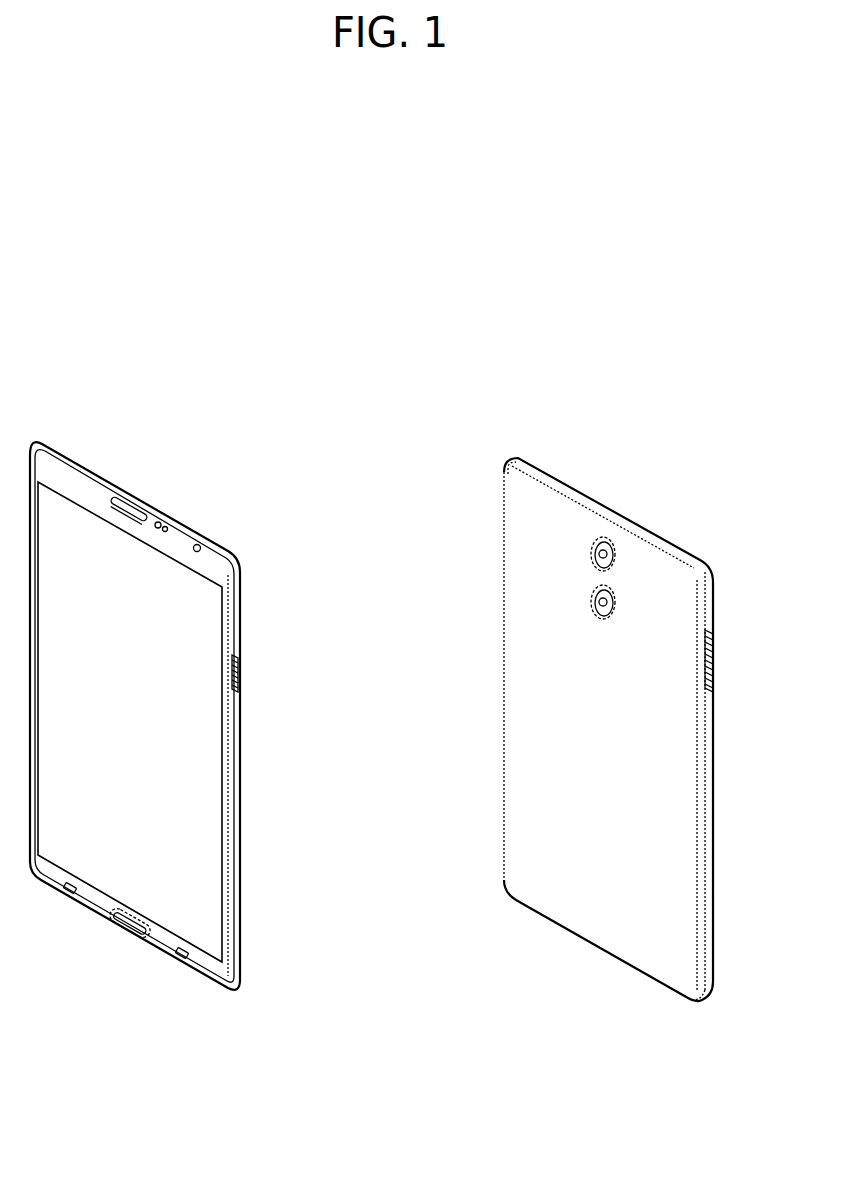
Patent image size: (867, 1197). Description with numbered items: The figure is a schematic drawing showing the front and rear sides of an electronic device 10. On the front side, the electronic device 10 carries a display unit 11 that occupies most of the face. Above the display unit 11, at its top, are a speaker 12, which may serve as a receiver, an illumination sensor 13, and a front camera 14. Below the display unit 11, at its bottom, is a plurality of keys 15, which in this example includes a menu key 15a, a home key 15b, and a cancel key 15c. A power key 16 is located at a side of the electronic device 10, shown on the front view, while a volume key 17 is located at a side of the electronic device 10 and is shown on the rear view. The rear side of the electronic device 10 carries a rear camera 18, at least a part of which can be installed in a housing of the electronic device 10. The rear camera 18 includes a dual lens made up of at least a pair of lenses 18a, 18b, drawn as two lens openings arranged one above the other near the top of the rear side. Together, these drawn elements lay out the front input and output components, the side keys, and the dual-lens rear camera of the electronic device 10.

The electronic device 10 is at (381, 361).
The display unit 11 is at (210, 602).
The speaker 12 is at (128, 494).
The illumination sensor 13 is at (158, 521).
The front camera 14 is at (198, 544).
The plurality of keys 15 is at (115, 953).
The menu key 15a is at (72, 893).
The home key 15b is at (130, 928).
The cancel key 15c is at (178, 981).
The power key 16 is at (238, 681).
The volume key 17 is at (714, 661).
The rear camera 18 is at (499, 551).
The first lens 18a is at (592, 554).
The second lens 18b is at (590, 602).